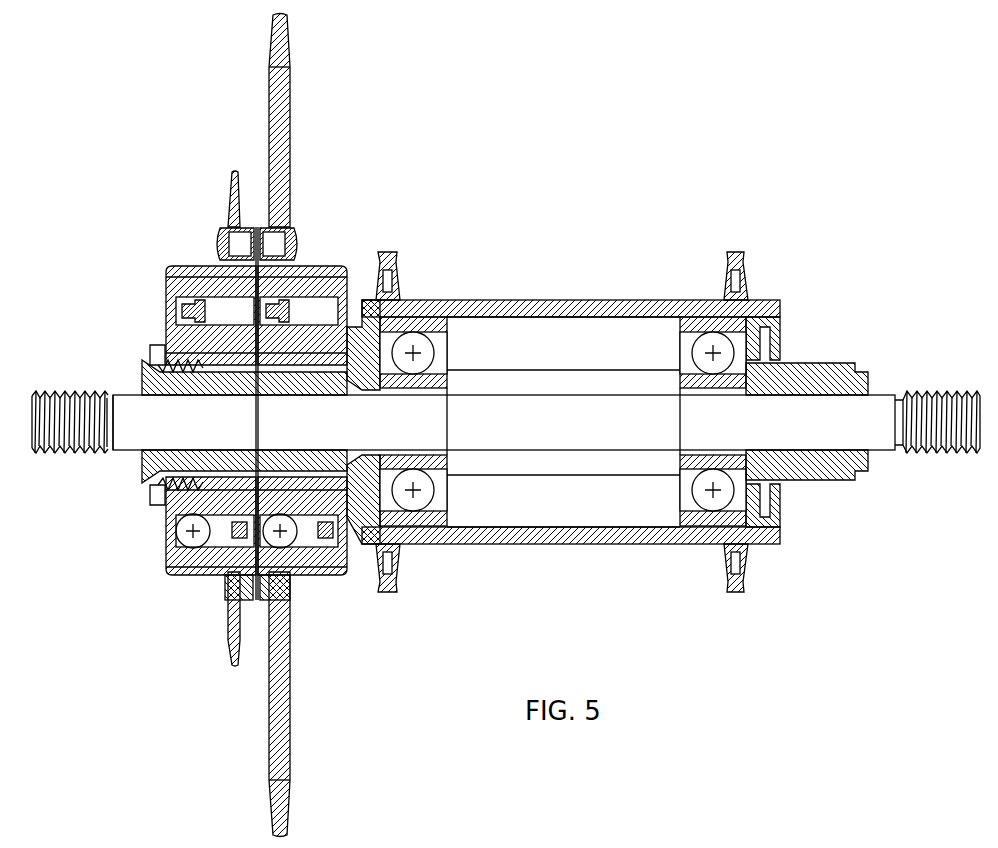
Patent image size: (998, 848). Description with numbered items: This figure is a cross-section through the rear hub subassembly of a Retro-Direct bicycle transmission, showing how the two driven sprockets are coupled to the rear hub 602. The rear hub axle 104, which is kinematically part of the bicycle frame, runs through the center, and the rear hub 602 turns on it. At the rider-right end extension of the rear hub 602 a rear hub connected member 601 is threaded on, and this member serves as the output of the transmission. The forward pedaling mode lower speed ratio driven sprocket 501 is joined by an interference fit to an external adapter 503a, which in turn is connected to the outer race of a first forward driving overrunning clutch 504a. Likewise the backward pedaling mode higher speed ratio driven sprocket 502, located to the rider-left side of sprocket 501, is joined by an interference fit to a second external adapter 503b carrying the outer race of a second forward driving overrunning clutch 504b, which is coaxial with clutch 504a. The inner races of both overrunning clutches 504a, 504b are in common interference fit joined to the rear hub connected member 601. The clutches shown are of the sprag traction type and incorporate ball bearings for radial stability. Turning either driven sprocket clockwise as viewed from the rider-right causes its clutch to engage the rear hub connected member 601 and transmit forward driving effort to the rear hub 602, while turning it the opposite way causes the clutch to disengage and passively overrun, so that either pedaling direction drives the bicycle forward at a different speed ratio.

The rear hub axle 104 is at (883, 452).
The rear hub 602 is at (525, 300).
The rear hub connected member 601 is at (152, 340).
The backward pedaling mode higher speed ratio driven sprocket 502 is at (285, 140).
The forward pedaling mode lower speed ratio driven sprocket 501 is at (228, 211).
The external adapter 503a is at (192, 268).
The external adapter 503b is at (318, 268).
The first forward driving overrunning clutch 504a is at (195, 575).
The second forward driving overrunning clutch 504b is at (305, 575).